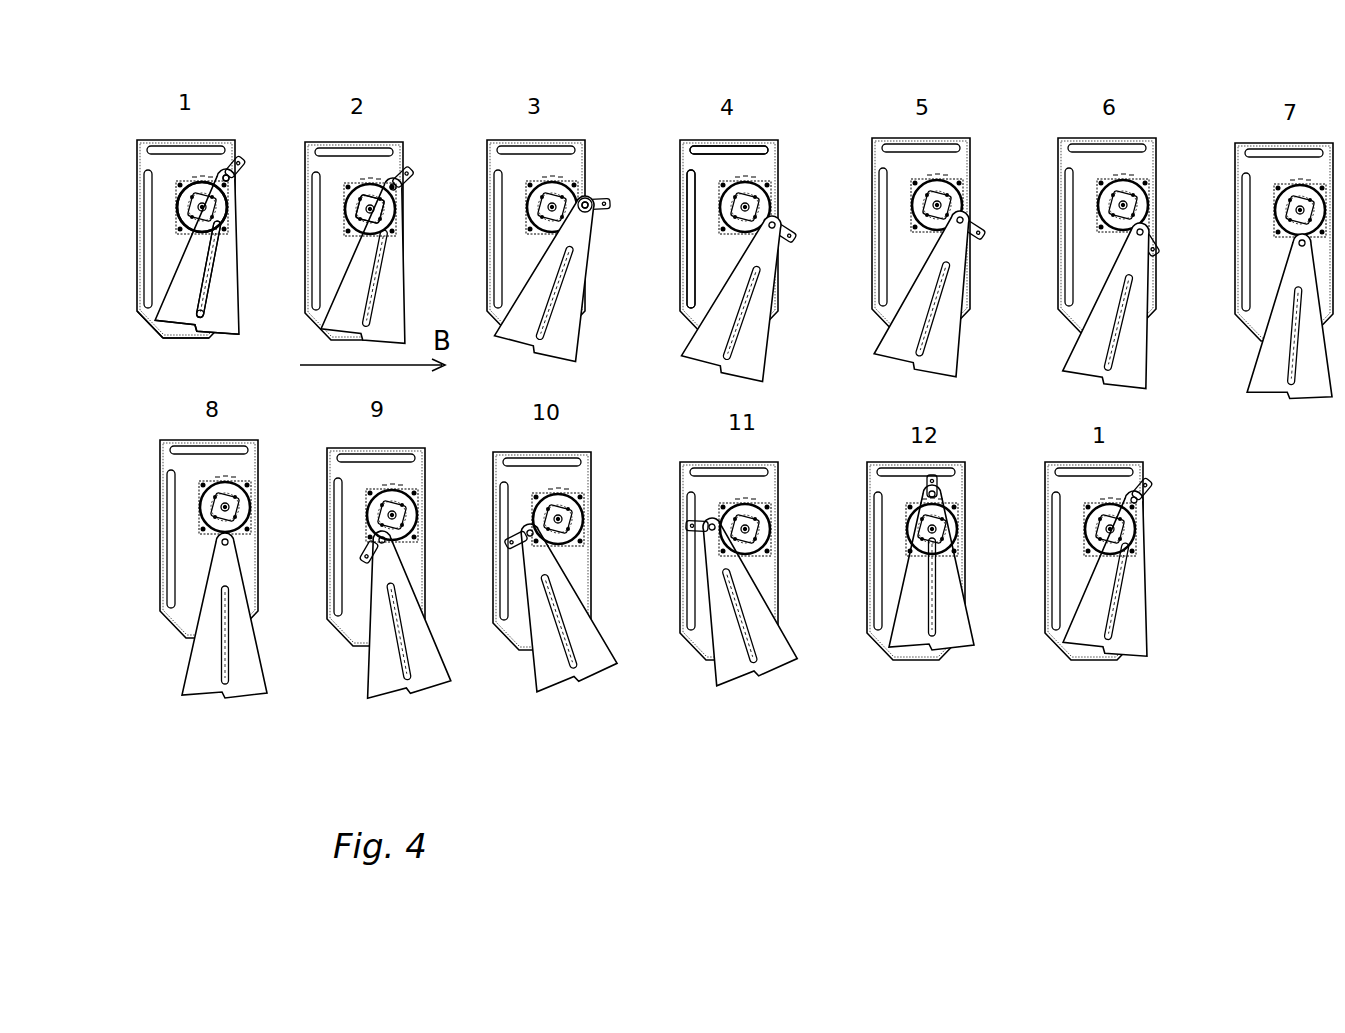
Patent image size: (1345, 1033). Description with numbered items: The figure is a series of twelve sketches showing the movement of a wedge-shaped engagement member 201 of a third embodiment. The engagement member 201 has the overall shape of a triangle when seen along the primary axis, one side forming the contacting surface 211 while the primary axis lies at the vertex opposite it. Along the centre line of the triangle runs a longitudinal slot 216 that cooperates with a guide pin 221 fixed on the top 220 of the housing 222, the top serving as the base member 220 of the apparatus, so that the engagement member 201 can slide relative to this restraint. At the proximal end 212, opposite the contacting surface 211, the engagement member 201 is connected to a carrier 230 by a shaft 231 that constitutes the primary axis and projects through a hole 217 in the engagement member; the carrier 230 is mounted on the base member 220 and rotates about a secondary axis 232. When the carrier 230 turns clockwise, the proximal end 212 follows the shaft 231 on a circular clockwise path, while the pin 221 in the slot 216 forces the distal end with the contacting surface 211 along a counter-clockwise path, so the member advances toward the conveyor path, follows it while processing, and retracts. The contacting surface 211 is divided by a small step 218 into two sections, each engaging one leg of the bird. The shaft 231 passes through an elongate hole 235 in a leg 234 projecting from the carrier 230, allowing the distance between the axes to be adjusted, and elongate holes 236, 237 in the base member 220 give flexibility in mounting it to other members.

The engagement member 201 is at (227, 318).
The contacting surface 211 is at (187, 335).
The proximal end 212 is at (236, 184).
The longitudinal slot 216 is at (210, 245).
The hole 217 is at (220, 172).
The step 218 is at (190, 340).
The base member 220 is at (163, 177).
The guide pin 221 is at (207, 307).
The housing 222 is at (150, 337).
The carrier 230 is at (192, 195).
The shaft 231 is at (230, 188).
The secondary axis 232 is at (369, 207).
The leg 234 is at (592, 203).
The elongate hole 235 is at (601, 199).
The elongate hole 236 is at (752, 152).
The elongate hole 237 is at (688, 277).